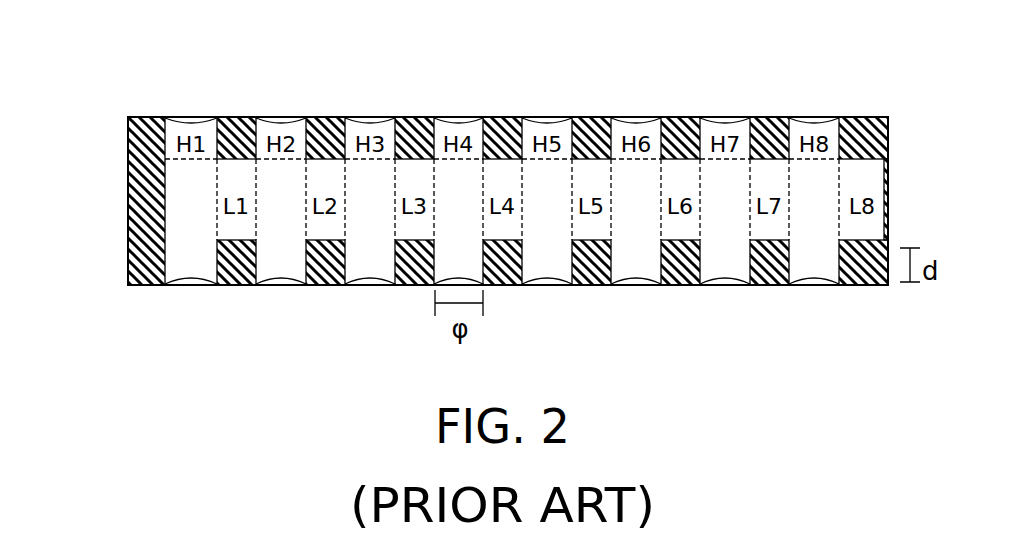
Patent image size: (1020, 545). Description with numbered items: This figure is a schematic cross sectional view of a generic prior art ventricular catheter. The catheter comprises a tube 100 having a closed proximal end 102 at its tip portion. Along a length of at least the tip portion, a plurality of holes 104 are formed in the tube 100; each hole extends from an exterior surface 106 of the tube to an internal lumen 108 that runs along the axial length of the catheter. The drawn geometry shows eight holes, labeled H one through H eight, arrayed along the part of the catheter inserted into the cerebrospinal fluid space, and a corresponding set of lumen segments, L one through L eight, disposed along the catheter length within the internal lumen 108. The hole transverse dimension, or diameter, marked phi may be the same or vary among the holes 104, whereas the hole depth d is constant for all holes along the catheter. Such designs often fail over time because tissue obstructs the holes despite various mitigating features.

The tube 100 is at (172, 81).
The closed proximal end 102 is at (127, 232).
The holes 104 is at (372, 120).
The exterior surface 106 is at (503, 118).
The internal lumen 108 is at (210, 223).